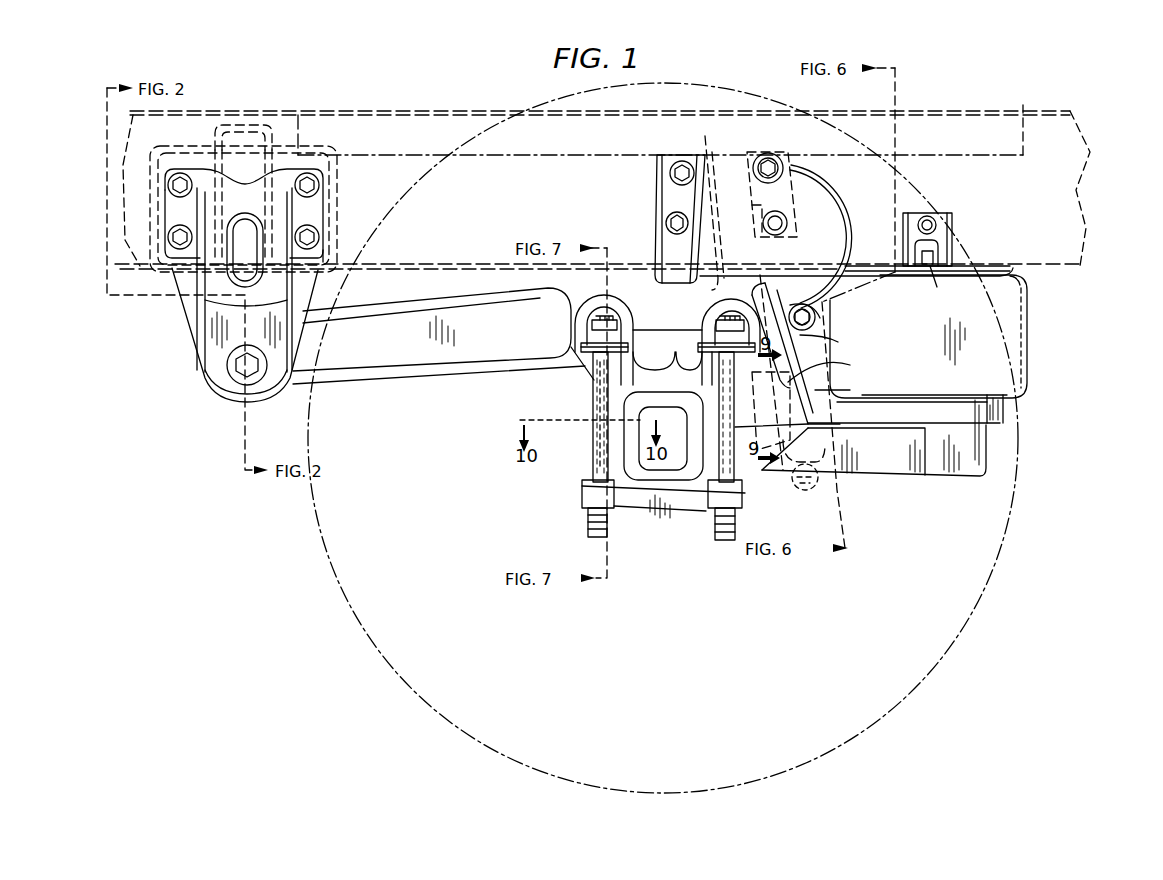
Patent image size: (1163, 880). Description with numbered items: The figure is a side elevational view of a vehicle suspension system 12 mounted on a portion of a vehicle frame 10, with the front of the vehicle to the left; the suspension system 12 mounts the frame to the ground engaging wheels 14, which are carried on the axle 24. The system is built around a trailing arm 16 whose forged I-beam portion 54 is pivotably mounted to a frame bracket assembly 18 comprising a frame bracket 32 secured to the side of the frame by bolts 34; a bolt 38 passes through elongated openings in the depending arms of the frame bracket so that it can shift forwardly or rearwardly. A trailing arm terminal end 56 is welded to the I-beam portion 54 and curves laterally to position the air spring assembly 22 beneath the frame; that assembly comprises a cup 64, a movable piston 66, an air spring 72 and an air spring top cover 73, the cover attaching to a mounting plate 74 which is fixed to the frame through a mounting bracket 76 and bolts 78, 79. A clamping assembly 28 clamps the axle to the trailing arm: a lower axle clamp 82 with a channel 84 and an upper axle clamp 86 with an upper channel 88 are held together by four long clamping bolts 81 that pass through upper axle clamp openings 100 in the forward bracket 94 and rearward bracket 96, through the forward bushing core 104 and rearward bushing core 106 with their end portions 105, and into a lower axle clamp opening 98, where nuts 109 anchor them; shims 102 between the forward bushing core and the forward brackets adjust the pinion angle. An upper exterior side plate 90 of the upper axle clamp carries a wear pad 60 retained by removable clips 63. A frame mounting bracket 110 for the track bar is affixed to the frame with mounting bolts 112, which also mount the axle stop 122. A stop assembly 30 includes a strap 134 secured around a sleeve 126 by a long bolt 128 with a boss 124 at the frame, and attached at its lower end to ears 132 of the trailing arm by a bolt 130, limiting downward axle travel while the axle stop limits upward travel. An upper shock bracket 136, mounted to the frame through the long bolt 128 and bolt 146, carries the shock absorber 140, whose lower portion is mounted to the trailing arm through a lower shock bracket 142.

The vehicle frame 10 is at (955, 135).
The suspension system 12 is at (312, 590).
The ground engaging wheels 14 is at (362, 645).
The trailing arm 16 is at (478, 398).
The frame bracket assembly 18 is at (236, 278).
The air spring assembly 22 is at (1065, 385).
The axle 24 is at (688, 420).
The clamping assembly 28 is at (631, 441).
The stop assembly 30 is at (720, 118).
The frame bracket 32 is at (195, 300).
The bolts 34 is at (338, 239).
The bolt 38 is at (238, 366).
The I-beam portion 54 is at (372, 370).
The trailing arm terminal end 56 is at (882, 474).
The wear pad 60 is at (845, 389).
The clips 63 is at (787, 417).
The cup 64 is at (975, 440).
The piston 66 is at (1005, 410).
The air spring 72 is at (1000, 358).
The air spring top cover 73 is at (1030, 282).
The mounting plate 74 is at (1035, 270).
The mounting bracket 76 is at (945, 236).
The bolt 78 is at (937, 287).
The bolt 79 is at (927, 214).
The clamping bolts 81 is at (593, 432).
The lower axle clamp 82 is at (684, 522).
The channel 84 is at (655, 500).
The upper axle clamp 86 is at (586, 368).
The upper channel 88 is at (663, 423).
The upper exterior side plate 90 is at (831, 373).
The forward bracket 94 is at (580, 351).
The rearward bracket 96 is at (780, 280).
The lower axle clamp opening 98 is at (593, 478).
The upper axle clamp openings 100 is at (675, 352).
The shims 102 is at (610, 322).
The forward bushing core 104 is at (578, 314).
The end portions 105 is at (580, 332).
The rearward bushing core 106 is at (735, 318).
The nuts 109 is at (588, 530).
The frame mounting bracket 110 is at (708, 140).
The mounting bolts 112 is at (670, 176).
The axle stop 122 is at (652, 219).
The boss 124 is at (770, 153).
The sleeve 126 is at (783, 165).
The long bolt 128 is at (756, 186).
The bolt 130 is at (815, 314).
The ears 132 is at (837, 345).
The strap 134 is at (848, 232).
The upper shock bracket 136 is at (756, 213).
The shock absorber 140 is at (768, 290).
The lower shock bracket 142 is at (805, 490).
The bolt 146 is at (788, 223).